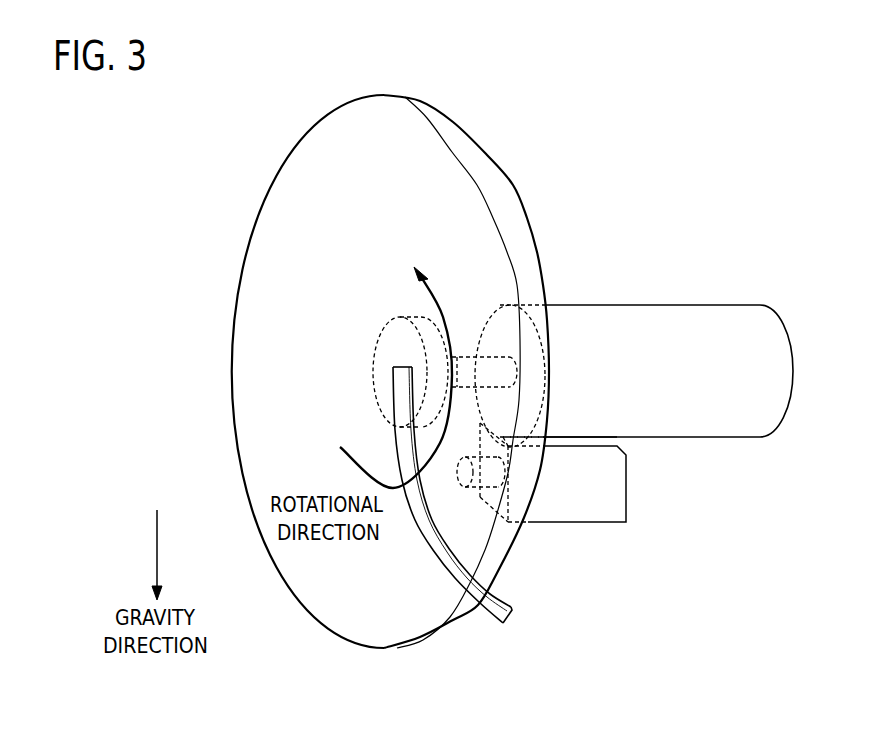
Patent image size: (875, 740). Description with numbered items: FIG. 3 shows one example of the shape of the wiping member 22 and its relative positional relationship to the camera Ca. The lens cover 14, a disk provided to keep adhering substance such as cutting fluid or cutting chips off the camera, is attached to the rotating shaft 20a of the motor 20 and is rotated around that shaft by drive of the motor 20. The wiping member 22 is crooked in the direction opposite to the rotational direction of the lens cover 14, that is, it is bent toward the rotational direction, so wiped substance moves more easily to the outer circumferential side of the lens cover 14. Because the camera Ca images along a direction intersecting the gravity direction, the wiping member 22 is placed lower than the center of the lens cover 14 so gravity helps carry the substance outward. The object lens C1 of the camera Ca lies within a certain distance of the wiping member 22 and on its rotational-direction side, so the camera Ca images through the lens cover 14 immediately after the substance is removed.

The lens cover 14 is at (263, 265).
The motor 20 is at (772, 353).
The rotating shaft 20a is at (494, 356).
The wiping member 22 is at (433, 549).
The camera Ca is at (613, 487).
The object lens C1 is at (457, 488).